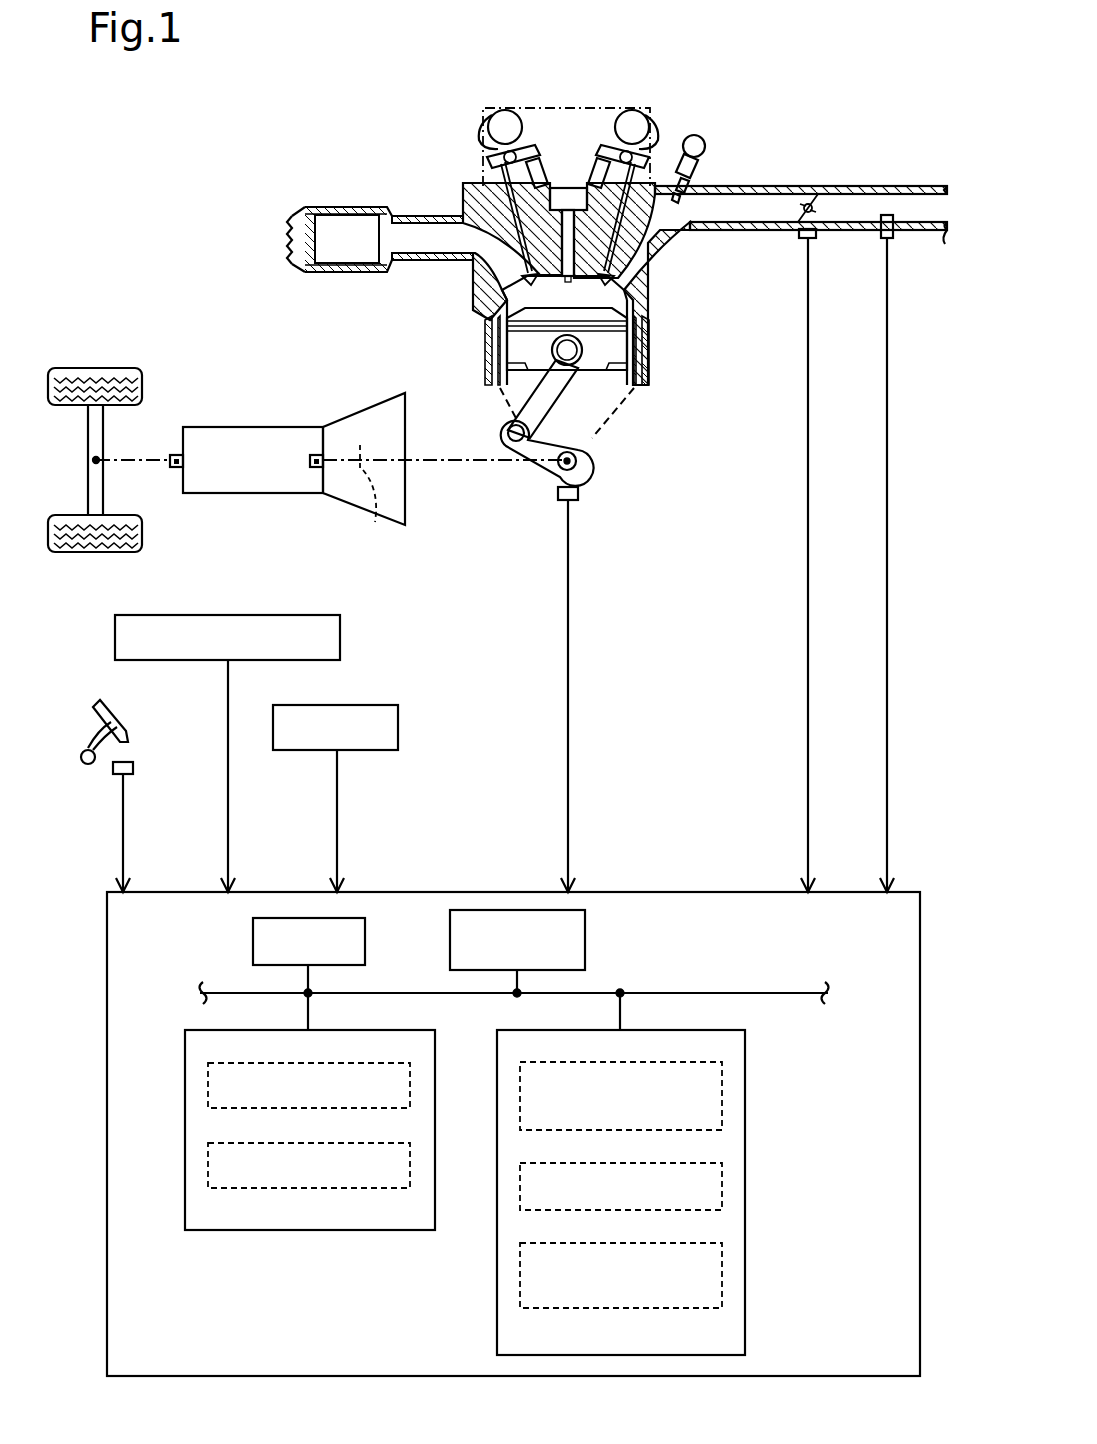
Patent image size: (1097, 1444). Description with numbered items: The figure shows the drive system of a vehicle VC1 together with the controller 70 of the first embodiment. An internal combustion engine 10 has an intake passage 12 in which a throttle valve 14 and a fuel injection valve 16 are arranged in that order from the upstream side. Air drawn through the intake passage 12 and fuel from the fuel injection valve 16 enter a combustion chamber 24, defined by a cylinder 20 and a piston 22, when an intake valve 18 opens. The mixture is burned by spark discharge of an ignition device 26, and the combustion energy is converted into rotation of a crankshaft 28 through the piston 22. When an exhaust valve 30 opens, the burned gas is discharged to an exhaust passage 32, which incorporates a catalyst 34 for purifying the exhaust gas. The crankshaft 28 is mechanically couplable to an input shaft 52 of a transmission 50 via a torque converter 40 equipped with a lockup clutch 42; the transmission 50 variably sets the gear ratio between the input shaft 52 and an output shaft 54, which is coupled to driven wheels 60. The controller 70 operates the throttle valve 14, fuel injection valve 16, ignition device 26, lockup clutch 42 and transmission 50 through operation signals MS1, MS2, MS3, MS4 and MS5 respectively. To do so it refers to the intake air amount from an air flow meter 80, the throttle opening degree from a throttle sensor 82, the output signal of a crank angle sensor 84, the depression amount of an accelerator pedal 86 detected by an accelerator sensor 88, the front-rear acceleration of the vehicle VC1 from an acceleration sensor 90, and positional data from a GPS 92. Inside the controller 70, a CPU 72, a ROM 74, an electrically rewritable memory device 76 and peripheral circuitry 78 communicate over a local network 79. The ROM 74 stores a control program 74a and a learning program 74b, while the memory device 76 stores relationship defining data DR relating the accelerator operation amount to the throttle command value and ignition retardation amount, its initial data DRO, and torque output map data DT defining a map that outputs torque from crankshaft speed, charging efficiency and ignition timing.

The internal combustion engine 10 is at (722, 90).
The intake passage 12 is at (945, 238).
The throttle valve 14 is at (813, 207).
The fuel injection valve 16 is at (688, 176).
The intake valve 18 is at (642, 268).
The cylinder 20 is at (640, 312).
The piston 22 is at (622, 346).
The combustion chamber 24 is at (512, 303).
The ignition device 26 is at (556, 188).
The crankshaft 28 is at (572, 442).
The exhaust valve 30 is at (515, 254).
The exhaust passage 32 is at (430, 220).
The catalyst 34 is at (342, 210).
The torque converter 40 is at (352, 414).
The lockup clutch 42 is at (369, 504).
The transmission 50 is at (246, 427).
The input shaft 52 is at (310, 458).
The output shaft 54 is at (170, 457).
The driven wheels 60 is at (118, 367).
The controller 70 is at (680, 888).
The CPU 72 is at (365, 940).
The ROM 74 is at (392, 1030).
The control program 74a is at (353, 1062).
The learning program 74b is at (353, 1142).
The memory device 76 is at (700, 1030).
The peripheral circuitry 78 is at (585, 940).
The local network 79 is at (760, 988).
The air flow meter 80 is at (894, 238).
The throttle sensor 82 is at (816, 233).
The crank angle sensor 84 is at (578, 493).
The accelerator pedal 86 is at (94, 704).
The accelerator sensor 88 is at (133, 768).
The acceleration sensor 90 is at (283, 614).
The GPS 92 is at (365, 704).
The operation signal MS1 is at (805, 201).
The operation signal MS2 is at (713, 144).
The operation signal MS3 is at (580, 186).
The operation signal MS4 is at (368, 455).
The operation signal MS5 is at (250, 499).
The vehicle VC1 is at (905, 520).
The relationship defining data DR is at (663, 1062).
The initial data DRO is at (663, 1162).
The torque output map data DT is at (663, 1242).